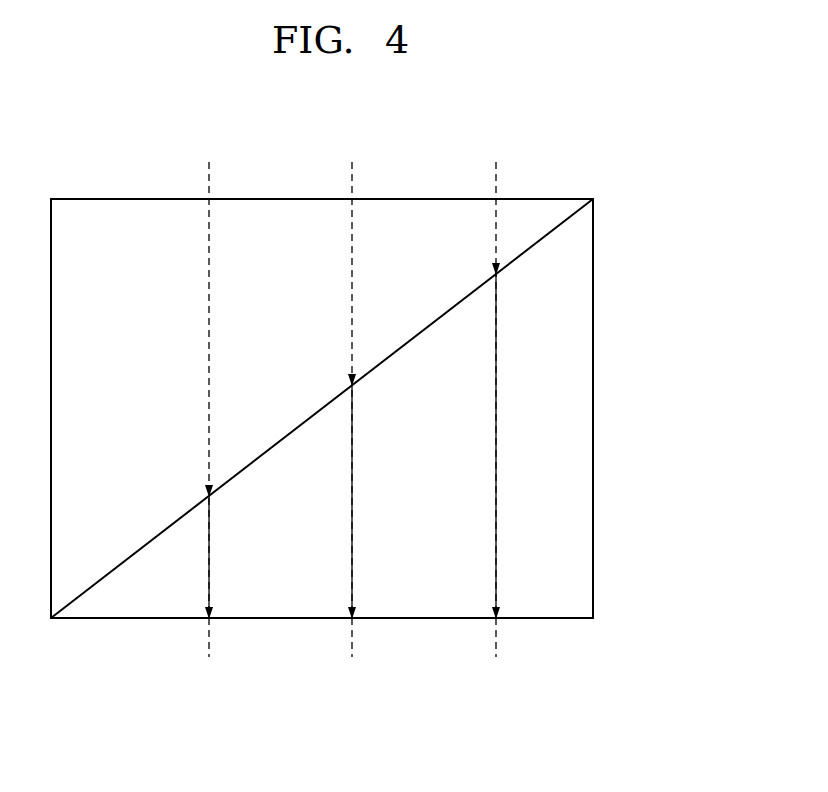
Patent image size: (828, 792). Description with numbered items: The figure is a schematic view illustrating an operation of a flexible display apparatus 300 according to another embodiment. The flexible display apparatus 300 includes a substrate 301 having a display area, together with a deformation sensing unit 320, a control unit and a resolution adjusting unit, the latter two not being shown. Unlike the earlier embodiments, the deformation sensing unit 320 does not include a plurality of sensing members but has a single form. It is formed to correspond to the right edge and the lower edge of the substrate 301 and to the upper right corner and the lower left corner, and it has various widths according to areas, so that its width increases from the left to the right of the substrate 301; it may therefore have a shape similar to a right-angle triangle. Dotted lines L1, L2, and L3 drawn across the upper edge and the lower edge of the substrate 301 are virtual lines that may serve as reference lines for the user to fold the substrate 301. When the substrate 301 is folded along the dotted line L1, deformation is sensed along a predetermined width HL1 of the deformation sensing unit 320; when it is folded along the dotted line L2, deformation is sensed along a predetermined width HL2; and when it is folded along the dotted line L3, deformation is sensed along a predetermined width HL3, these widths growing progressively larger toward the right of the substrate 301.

The flexible display apparatus 300 is at (612, 195).
The substrate 301 is at (122, 199).
The deformation sensing unit 320 is at (596, 430).
The dotted line L1 is at (208, 395).
The dotted line L2 is at (351, 395).
The dotted line L3 is at (495, 395).
The predetermined width HL1 is at (210, 577).
The predetermined width HL2 is at (352, 577).
The predetermined width HL3 is at (497, 577).